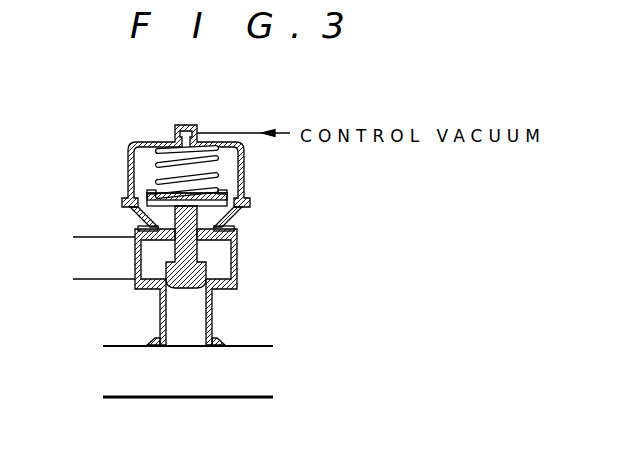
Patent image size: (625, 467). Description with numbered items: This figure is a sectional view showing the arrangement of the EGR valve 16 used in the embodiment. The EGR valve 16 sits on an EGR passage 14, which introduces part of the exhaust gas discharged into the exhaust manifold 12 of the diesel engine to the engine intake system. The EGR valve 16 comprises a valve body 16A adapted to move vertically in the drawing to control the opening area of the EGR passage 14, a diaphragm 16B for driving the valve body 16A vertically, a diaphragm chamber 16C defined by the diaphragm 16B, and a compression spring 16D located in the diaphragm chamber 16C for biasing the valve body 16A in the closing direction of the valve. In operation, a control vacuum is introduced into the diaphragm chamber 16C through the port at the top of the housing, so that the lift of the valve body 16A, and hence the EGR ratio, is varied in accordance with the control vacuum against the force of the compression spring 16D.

The exhaust manifold 12 is at (182, 388).
The EGR passage 14 is at (95, 237).
The EGR valve 16 is at (210, 123).
The valve body 16A is at (207, 262).
The diaphragm 16B is at (240, 193).
The diaphragm chamber 16C is at (146, 174).
The compression spring 16D is at (221, 157).